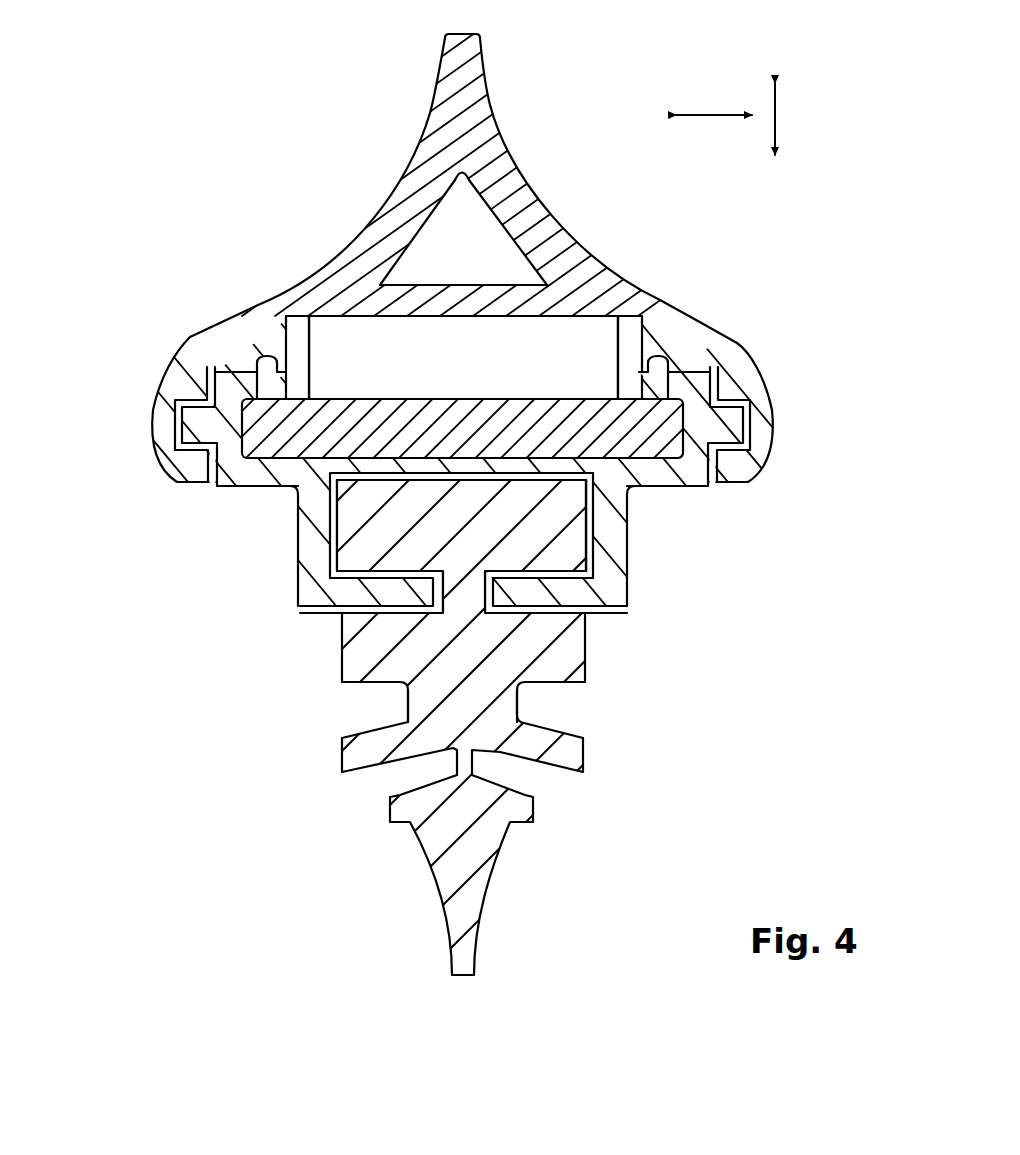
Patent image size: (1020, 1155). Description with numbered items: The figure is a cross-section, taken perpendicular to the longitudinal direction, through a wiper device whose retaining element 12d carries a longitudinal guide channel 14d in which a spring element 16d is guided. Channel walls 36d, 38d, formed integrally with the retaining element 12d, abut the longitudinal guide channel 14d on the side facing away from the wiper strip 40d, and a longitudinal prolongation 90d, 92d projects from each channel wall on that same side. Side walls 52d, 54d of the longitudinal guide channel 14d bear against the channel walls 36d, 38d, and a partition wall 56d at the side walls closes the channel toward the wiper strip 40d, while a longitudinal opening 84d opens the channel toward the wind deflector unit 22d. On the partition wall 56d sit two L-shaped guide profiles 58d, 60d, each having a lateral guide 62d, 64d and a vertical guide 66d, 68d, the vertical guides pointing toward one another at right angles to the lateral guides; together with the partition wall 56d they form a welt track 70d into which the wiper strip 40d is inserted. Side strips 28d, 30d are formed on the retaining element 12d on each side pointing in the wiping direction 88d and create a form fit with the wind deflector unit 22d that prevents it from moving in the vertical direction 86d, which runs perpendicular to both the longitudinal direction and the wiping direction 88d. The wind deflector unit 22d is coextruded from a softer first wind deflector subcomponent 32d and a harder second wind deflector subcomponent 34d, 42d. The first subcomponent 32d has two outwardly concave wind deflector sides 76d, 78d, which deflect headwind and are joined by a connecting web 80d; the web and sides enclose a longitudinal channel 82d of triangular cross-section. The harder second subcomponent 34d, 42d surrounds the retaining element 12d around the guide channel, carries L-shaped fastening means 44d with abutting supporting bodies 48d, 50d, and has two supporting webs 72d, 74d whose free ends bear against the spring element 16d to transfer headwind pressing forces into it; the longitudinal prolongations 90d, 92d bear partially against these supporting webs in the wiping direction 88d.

The wind deflector unit 22d is at (510, 496).
The first wind deflector subcomponent 32d is at (455, 46).
The wind deflector side 76d is at (424, 128).
The wind deflector side 78d is at (503, 124).
The connecting web 80d is at (485, 298).
The longitudinal channel 82d is at (486, 246).
The supporting web 72d is at (287, 312).
The supporting web 74d is at (633, 318).
The second wind deflector subcomponent 34d is at (253, 320).
The second wind deflector subcomponent 42d is at (723, 347).
The channel wall 36d is at (213, 375).
The channel wall 38d is at (690, 381).
The supporting body 48d is at (193, 393).
The supporting body 50d is at (730, 395).
The side strip 28d is at (197, 420).
The side strip 30d is at (735, 418).
The retaining element 12d is at (207, 455).
The longitudinal guide channel 14d is at (710, 443).
The side wall 52d is at (190, 466).
The side wall 54d is at (753, 481).
The fastening means 44d is at (232, 480).
The spring element 16d is at (397, 435).
The longitudinal opening 84d is at (485, 383).
The longitudinal prolongation 90d is at (300, 370).
The longitudinal prolongation 92d is at (628, 370).
The partition wall 56d is at (510, 455).
The guide profile 60d is at (610, 597).
The guide profile 58d is at (397, 600).
The vertical guide 68d is at (558, 592).
The lateral guide 62d is at (320, 553).
The lateral guide 64d is at (605, 553).
The vertical guide 66d is at (452, 712).
The wiper strip 40d is at (345, 737).
The welt track 70d is at (672, 526).
The vertical direction 86d is at (778, 115).
The wiping direction 88d is at (715, 113).